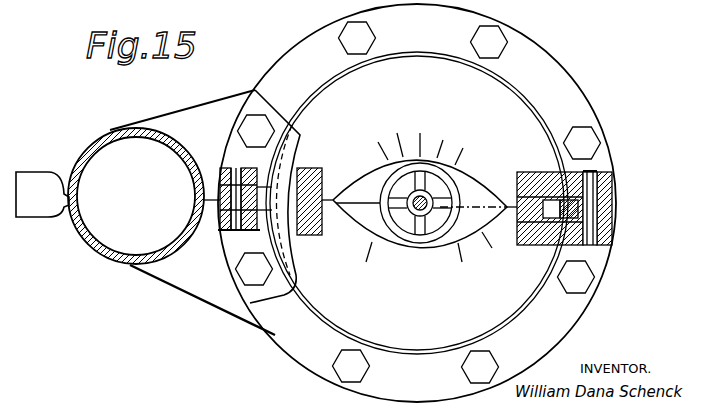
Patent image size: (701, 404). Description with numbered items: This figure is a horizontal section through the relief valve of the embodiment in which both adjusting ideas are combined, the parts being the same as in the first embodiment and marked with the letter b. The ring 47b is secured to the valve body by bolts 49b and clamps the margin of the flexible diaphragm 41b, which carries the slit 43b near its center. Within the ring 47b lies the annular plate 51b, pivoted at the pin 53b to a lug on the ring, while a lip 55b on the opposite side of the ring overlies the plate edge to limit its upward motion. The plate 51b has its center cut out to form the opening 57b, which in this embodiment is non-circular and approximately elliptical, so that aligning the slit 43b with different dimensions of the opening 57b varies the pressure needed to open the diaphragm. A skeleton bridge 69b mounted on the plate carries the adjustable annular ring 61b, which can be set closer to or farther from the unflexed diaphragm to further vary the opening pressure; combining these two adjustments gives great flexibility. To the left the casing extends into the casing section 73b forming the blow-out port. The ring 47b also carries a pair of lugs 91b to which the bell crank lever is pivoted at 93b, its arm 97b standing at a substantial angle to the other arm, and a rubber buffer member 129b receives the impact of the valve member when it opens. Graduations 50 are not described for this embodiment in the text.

The diaphragm 41b is at (345, 232).
The slit 43b is at (455, 241).
The ring 47b is at (585, 96).
The bolts 49b is at (488, 36).
The hub pointer 50 is at (437, 258).
The plate 51b is at (340, 325).
The pin 53b is at (597, 173).
The lip 55b is at (305, 134).
The opening 57b is at (460, 170).
The annular ring 61b is at (368, 221).
The bridge 69b is at (310, 167).
The casing section 73b is at (84, 193).
The lugs 91b is at (214, 226).
The pivot 93b is at (230, 167).
The arm 97b is at (200, 200).
The buffer member 129b is at (32, 207).